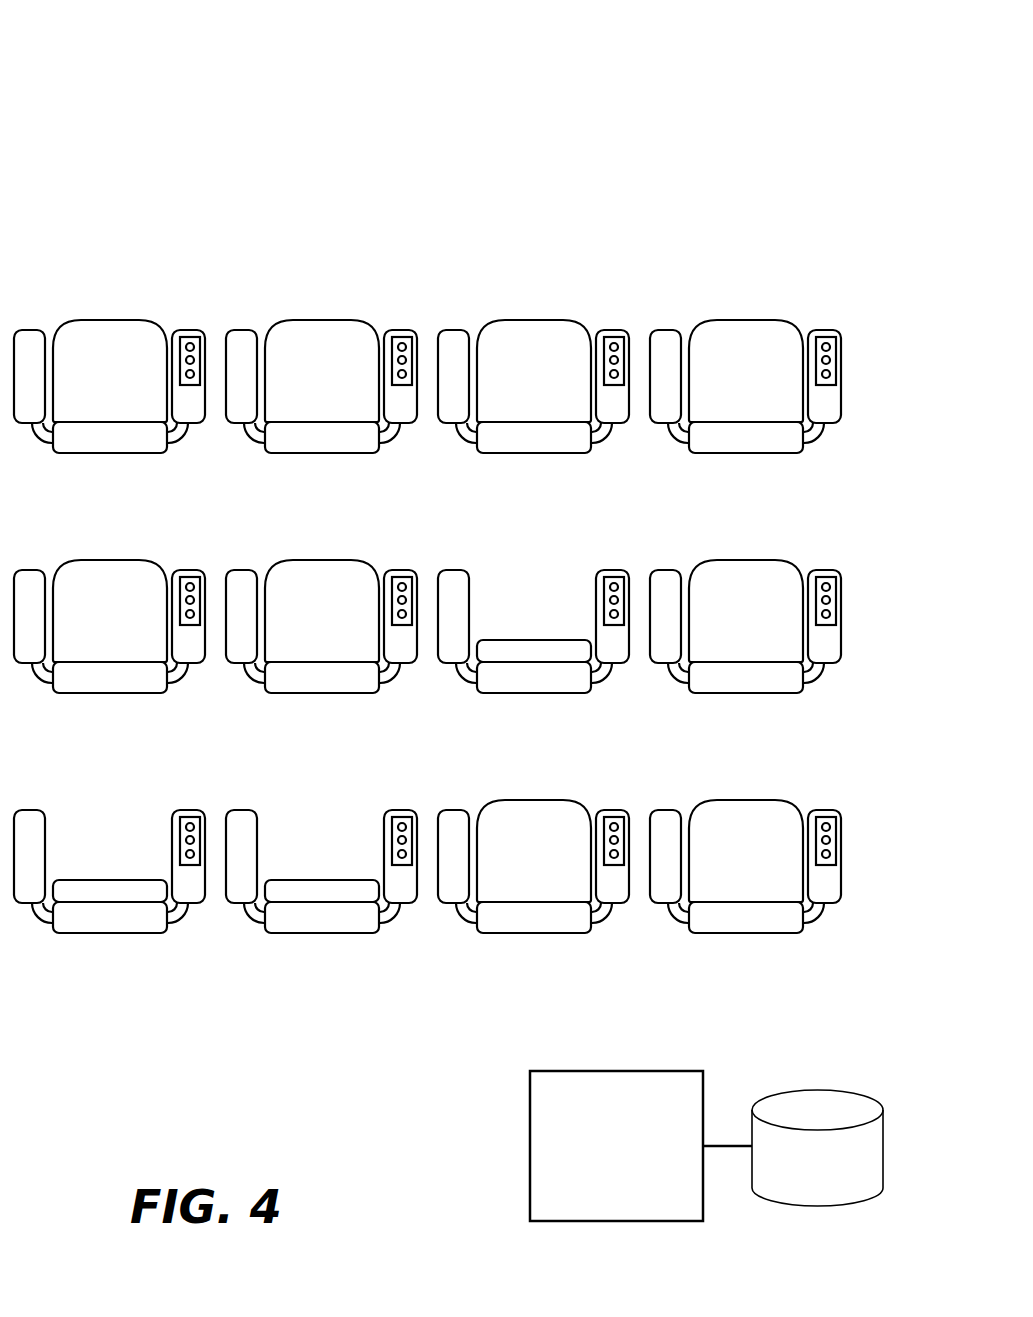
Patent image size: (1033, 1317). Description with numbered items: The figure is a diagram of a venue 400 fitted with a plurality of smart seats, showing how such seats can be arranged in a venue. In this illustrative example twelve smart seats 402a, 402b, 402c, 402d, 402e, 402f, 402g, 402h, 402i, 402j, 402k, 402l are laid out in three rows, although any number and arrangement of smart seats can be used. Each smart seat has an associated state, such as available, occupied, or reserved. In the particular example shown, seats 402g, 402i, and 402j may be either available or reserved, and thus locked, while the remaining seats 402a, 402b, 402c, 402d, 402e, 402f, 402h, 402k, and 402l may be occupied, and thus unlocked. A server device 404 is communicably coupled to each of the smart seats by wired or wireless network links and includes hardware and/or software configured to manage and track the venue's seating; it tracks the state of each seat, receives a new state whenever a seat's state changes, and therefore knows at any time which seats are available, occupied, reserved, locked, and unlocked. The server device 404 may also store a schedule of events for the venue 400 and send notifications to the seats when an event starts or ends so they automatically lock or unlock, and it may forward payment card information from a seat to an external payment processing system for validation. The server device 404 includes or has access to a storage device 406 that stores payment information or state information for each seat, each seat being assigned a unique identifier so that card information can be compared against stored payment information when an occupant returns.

The venue 400 is at (135, 113).
The smart seat 402a is at (109, 345).
The smart seat 402b is at (321, 345).
The smart seat 402c is at (533, 347).
The smart seat 402d is at (745, 345).
The smart seat 402e is at (109, 589).
The smart seat 402f is at (321, 589).
The smart seat 402g is at (533, 589).
The smart seat 402h is at (745, 588).
The smart seat 402i is at (109, 827).
The smart seat 402j is at (321, 828).
The smart seat 402k is at (533, 829).
The smart seat 402l is at (745, 827).
The server device 404 is at (594, 1195).
The storage device 406 is at (840, 1171).